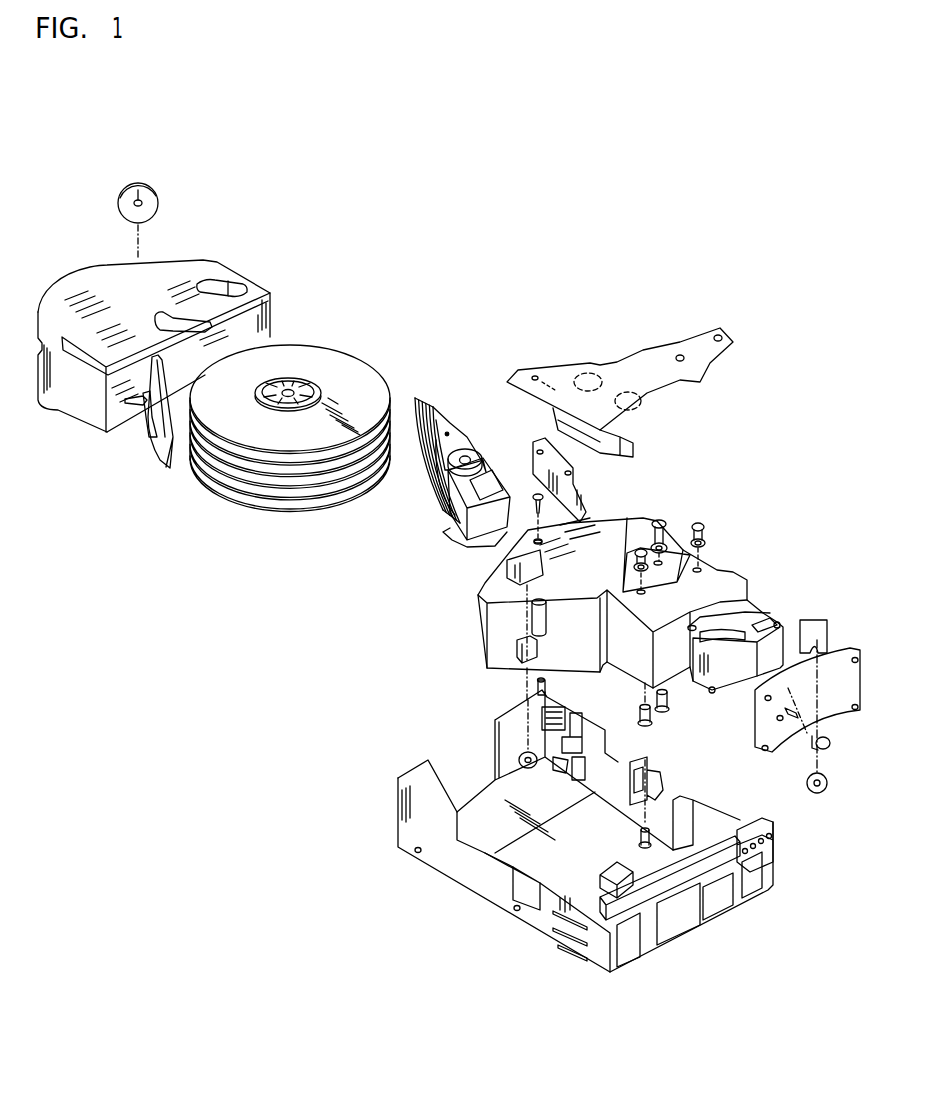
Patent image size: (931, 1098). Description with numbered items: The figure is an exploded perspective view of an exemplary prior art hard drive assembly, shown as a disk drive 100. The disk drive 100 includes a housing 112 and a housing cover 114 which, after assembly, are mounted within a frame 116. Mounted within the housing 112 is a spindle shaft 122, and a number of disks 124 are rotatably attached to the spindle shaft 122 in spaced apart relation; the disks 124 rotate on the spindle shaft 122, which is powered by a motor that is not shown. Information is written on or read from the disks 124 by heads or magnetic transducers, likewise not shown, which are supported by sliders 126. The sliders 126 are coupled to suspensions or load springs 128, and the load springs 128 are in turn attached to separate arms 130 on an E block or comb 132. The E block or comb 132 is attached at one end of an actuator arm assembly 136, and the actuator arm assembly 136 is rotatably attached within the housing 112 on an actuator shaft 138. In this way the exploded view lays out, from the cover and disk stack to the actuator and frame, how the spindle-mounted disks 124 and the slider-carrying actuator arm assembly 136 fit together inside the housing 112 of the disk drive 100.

The disk drive 100 is at (393, 302).
The housing 112 is at (628, 527).
The housing cover 114 is at (88, 413).
The frame 116 is at (445, 860).
The spindle shaft 122 is at (289, 390).
The disks 124 is at (255, 503).
The sliders 126 is at (418, 396).
The load springs 128 is at (431, 406).
The arms 130 is at (458, 436).
The E block or comb 132 is at (433, 465).
The actuator arm assembly 136 is at (438, 490).
The actuator shaft 138 is at (467, 458).